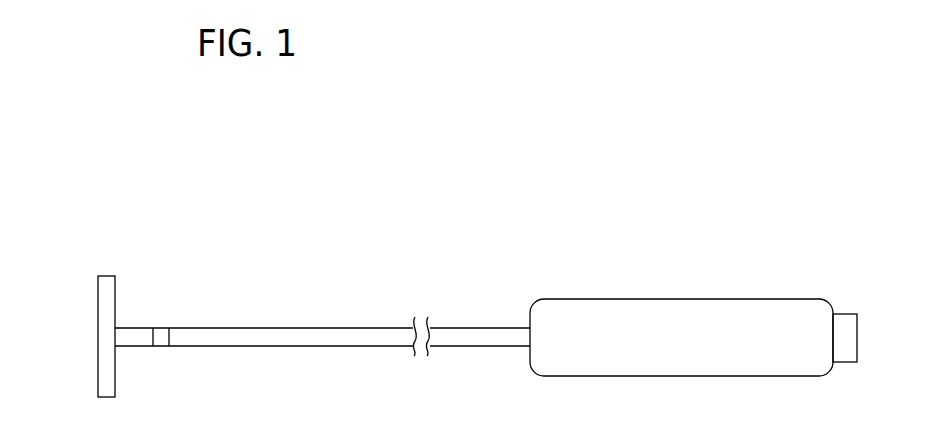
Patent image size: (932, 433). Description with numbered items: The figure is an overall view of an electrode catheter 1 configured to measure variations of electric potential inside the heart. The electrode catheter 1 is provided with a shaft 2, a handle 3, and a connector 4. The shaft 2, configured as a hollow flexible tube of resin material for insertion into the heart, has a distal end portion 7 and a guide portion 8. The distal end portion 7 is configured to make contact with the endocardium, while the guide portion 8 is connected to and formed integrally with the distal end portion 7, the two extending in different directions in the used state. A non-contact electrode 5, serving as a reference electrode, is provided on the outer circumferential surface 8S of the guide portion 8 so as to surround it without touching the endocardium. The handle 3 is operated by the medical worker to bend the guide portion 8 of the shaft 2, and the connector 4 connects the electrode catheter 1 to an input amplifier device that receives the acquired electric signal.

The electrode catheter 1 is at (427, 167).
The shaft 2 is at (357, 308).
The handle 3 is at (705, 305).
The connector 4 is at (853, 333).
The non-contact electrode 5 is at (162, 332).
The distal end portion 7 is at (110, 380).
The guide portion 8 is at (269, 333).
The outer circumferential surface 8S is at (199, 333).